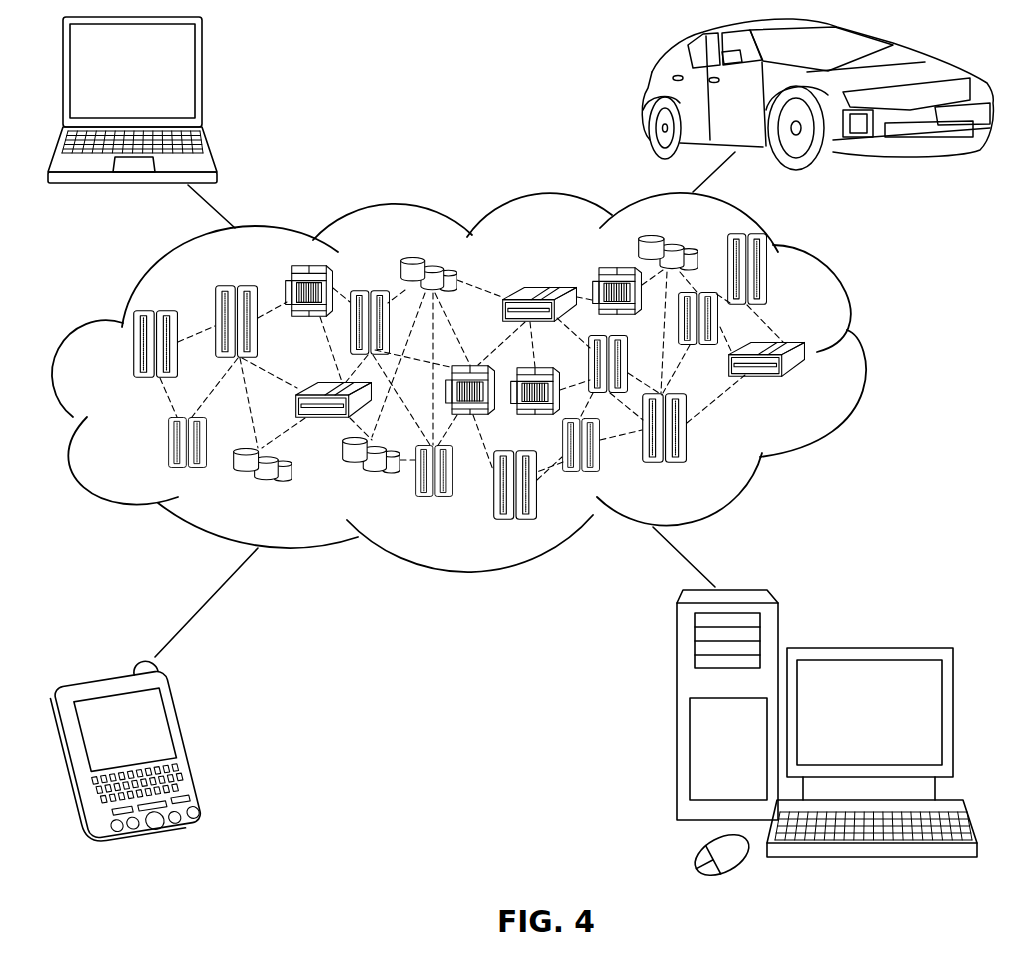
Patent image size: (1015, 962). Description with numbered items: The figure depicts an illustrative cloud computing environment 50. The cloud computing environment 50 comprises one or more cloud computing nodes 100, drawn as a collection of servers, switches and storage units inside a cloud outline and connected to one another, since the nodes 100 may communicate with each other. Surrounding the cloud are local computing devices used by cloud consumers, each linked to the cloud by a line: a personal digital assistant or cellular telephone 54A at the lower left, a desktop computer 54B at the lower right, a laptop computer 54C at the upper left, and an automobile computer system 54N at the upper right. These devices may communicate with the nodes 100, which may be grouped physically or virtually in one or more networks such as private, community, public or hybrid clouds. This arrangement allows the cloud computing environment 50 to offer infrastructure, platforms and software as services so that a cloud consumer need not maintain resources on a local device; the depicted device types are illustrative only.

The cloud computing environment 50 is at (872, 355).
The cloud computing nodes 100 is at (806, 386).
The personal digital assistant (PDA) or cellular telephone 54A is at (190, 743).
The desktop computer 54B is at (868, 648).
The laptop computer 54C is at (202, 80).
The automobile computer system 54N is at (644, 97).